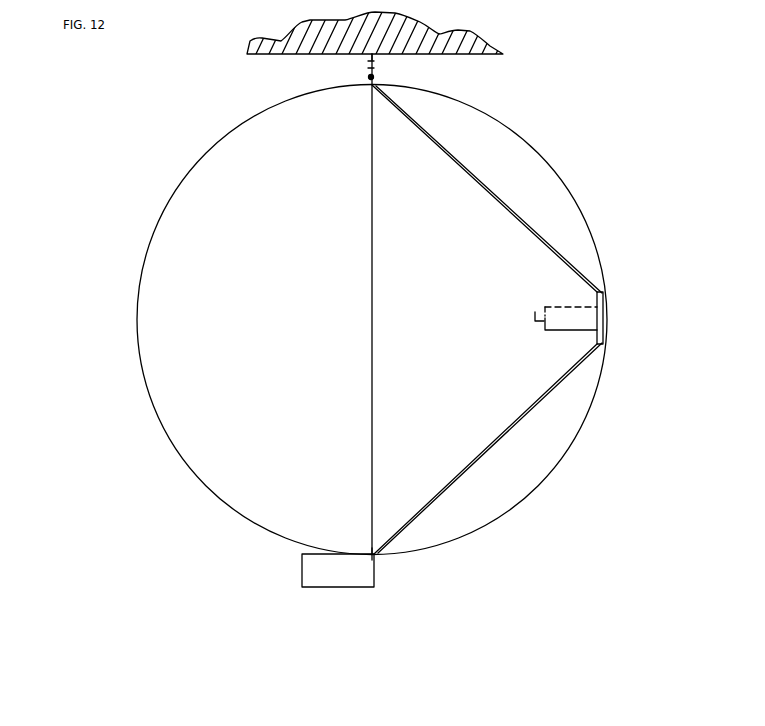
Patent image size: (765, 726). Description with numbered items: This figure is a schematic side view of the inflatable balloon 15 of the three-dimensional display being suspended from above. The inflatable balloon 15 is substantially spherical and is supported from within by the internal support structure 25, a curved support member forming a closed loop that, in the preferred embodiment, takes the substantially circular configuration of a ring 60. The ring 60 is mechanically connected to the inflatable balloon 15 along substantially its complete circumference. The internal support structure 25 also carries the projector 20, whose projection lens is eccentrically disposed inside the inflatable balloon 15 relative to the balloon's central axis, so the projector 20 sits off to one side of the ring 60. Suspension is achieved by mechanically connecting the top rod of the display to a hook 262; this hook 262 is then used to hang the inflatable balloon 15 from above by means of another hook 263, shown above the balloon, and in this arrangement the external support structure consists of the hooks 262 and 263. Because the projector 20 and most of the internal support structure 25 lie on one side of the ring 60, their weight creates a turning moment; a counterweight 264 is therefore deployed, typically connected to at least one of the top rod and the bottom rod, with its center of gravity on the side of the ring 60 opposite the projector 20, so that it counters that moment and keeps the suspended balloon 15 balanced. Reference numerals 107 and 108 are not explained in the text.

The inflatable balloon 15 is at (145, 246).
The projector 20 is at (567, 318).
The internal support structure 25 is at (493, 452).
The ring 60 is at (372, 421).
The apex point 107 is at (376, 84).
The base point 108 is at (377, 568).
The hook 262 is at (365, 66).
The hook 263 is at (376, 60).
The counterweight 264 is at (335, 571).